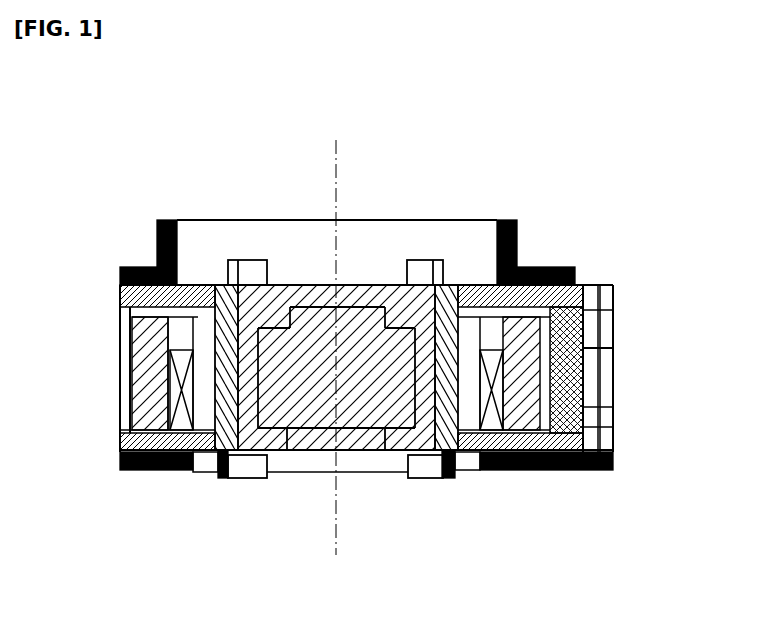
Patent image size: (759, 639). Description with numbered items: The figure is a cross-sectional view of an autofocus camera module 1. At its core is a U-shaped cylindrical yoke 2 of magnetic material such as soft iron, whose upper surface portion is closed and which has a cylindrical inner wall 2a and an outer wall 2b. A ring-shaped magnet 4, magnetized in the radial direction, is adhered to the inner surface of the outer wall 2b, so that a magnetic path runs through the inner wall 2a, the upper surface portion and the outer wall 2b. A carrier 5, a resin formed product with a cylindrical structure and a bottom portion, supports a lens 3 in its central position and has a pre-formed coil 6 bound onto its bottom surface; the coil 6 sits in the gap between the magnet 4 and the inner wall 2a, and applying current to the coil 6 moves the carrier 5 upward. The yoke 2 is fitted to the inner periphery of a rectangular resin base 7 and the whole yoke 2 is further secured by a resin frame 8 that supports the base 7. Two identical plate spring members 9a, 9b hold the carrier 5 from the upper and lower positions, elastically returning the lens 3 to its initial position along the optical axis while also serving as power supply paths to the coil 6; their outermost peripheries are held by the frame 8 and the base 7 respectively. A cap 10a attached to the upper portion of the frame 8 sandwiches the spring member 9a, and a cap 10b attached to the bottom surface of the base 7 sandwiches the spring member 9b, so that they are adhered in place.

The autofocus camera module 1 is at (458, 208).
The yoke 2 is at (585, 350).
The inner wall 2a is at (150, 268).
The outer wall 2b is at (122, 362).
The lens 3 is at (388, 472).
The magnet 4 is at (553, 268).
The carrier 5 is at (450, 477).
The coil 6 is at (490, 472).
The base 7 is at (585, 427).
The frame 8 is at (598, 300).
The spring member 9a is at (207, 300).
The spring member 9b is at (200, 472).
The cap 10a is at (517, 228).
The cap 10b is at (572, 471).